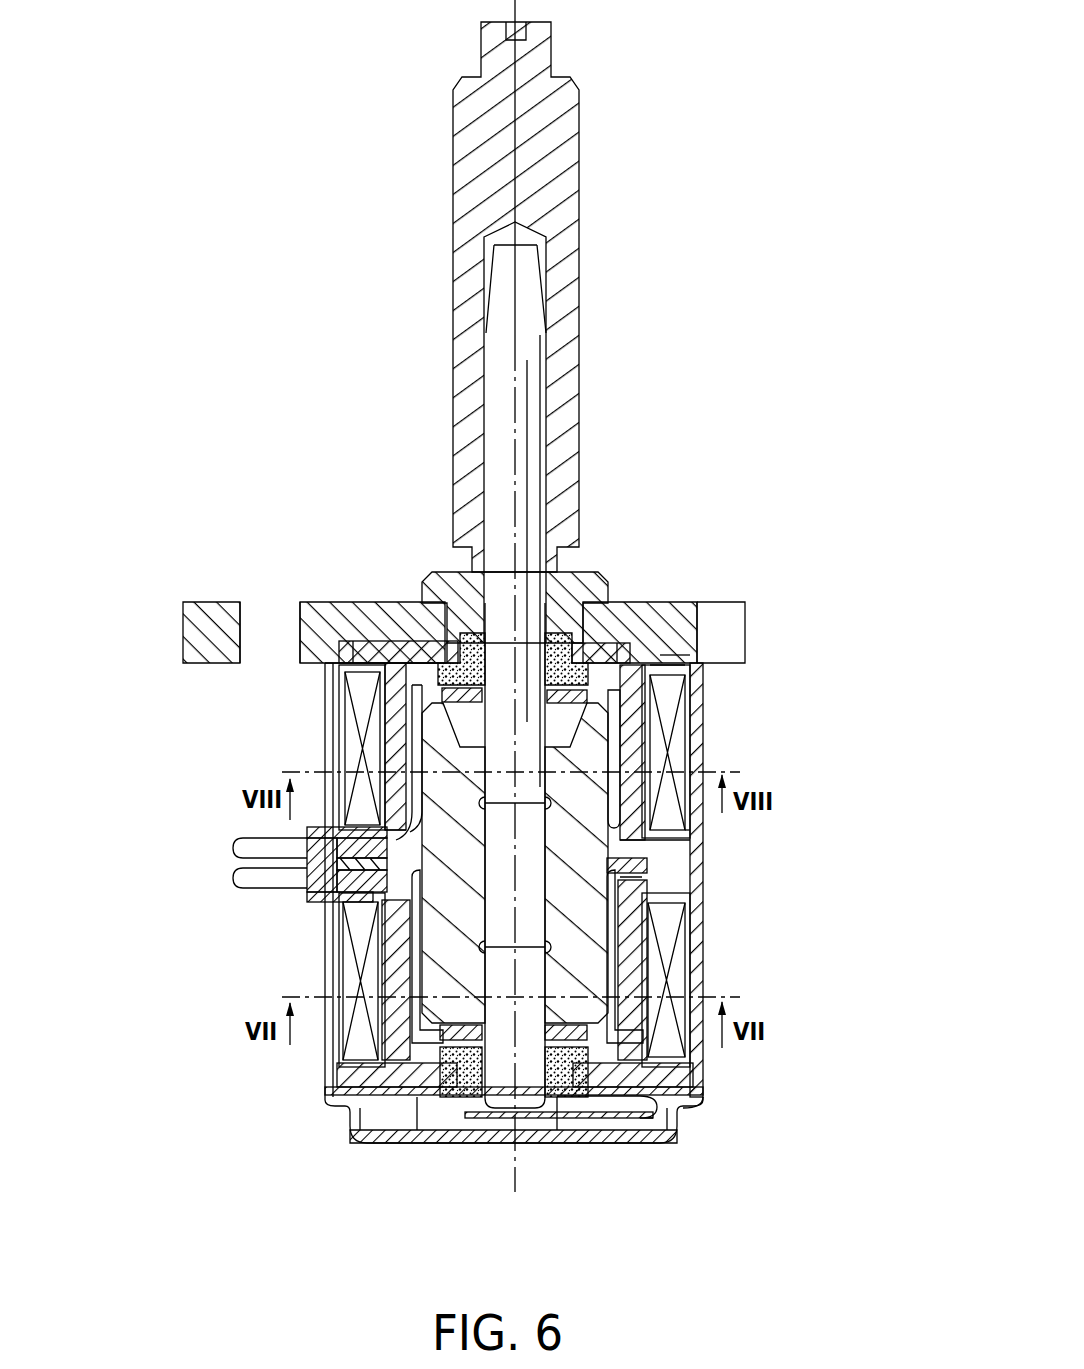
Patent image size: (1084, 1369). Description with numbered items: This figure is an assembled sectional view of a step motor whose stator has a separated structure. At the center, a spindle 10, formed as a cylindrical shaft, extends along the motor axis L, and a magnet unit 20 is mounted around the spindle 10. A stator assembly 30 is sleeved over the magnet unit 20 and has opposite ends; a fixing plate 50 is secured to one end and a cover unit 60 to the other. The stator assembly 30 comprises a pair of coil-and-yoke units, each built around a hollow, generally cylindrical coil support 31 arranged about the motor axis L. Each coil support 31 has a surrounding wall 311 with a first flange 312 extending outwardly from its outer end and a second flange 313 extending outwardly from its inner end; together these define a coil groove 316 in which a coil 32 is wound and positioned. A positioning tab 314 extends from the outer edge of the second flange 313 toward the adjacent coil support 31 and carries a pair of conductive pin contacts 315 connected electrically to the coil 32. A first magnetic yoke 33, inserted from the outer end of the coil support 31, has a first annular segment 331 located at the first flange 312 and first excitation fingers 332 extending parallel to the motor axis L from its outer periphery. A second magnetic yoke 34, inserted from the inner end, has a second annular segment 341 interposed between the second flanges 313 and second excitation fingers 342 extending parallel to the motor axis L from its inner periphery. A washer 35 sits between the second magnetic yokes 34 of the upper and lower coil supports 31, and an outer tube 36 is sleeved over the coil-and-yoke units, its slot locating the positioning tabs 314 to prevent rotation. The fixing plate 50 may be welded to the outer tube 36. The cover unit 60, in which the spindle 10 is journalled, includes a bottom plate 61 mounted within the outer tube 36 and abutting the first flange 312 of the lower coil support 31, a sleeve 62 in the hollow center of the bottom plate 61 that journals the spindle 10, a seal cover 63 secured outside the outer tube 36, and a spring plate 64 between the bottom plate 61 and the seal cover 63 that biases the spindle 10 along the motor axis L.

The spindle 10 is at (532, 840).
The magnet unit 20 is at (587, 750).
The stator assembly 30 is at (707, 962).
The coil support 31 is at (660, 756).
The coil 32 is at (692, 762).
The first magnetic yoke 33 is at (383, 652).
The second magnetic yoke 34 is at (665, 847).
The washer 35 is at (683, 873).
The outer tube 36 is at (707, 1058).
The fixing plate 50 is at (733, 598).
The cover unit 60 is at (580, 1152).
The bottom plate 61 is at (710, 1090).
The sleeve 62 is at (458, 1092).
The seal cover 63 is at (667, 1135).
The spring plate 64 is at (618, 1122).
The surrounding wall 311 is at (638, 693).
The first flange 312 is at (680, 655).
The second flange 313 is at (693, 830).
The positioning tab 314 is at (310, 898).
The conductive pin contacts 315 is at (245, 845).
The coil groove 316 is at (673, 667).
The first annular segment 331 is at (420, 668).
The first excitation fingers 332 is at (397, 717).
The second annular segment 341 is at (645, 882).
The second excitation fingers 342 is at (630, 980).
The motor axis L is at (517, 477).